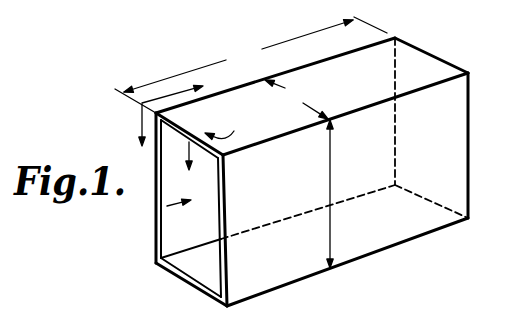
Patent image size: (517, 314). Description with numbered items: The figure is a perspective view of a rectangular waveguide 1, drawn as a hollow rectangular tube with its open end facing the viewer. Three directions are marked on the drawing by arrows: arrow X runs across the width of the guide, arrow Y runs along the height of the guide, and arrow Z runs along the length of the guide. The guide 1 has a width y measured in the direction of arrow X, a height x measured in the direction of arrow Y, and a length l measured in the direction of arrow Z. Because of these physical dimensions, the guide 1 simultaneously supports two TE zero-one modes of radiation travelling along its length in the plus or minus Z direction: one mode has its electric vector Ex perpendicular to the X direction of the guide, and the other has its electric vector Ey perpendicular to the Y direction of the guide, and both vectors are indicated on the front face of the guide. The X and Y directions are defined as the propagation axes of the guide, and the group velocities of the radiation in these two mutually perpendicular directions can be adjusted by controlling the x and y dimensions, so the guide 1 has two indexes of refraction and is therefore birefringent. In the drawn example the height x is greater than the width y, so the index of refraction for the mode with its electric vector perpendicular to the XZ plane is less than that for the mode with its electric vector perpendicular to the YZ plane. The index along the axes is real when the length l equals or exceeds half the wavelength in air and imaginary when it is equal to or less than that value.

The rectangular waveguide 1 is at (371, 167).
The length l is at (251, 65).
The arrow Z is at (182, 86).
The arrow Y is at (142, 120).
The arrow X is at (220, 124).
The height x is at (322, 194).
The width y is at (296, 99).
The electric vector Ex is at (199, 151).
The electric vector Ey is at (172, 206).